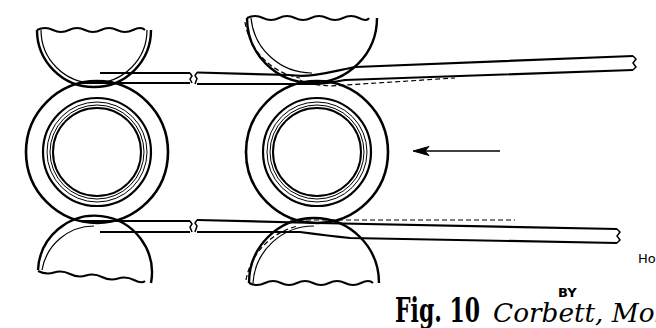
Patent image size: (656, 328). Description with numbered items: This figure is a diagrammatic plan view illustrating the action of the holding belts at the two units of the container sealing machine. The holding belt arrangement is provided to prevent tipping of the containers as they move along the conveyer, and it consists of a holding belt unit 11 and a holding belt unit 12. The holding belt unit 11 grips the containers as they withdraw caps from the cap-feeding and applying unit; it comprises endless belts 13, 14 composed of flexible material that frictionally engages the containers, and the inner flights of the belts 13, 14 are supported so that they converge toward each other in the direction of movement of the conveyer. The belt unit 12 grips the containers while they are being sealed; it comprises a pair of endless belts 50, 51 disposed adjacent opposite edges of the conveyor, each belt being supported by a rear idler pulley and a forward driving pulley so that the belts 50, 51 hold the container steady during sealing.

The holding belt unit 11 is at (504, 61).
The holding belt unit 12 is at (179, 71).
The endless belt 13 is at (568, 66).
The endless belt 14 is at (525, 232).
The endless belt 50 is at (218, 77).
The endless belt 51 is at (218, 221).